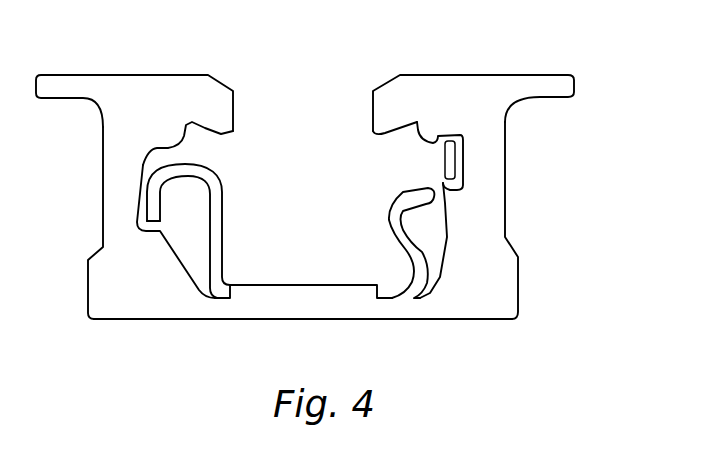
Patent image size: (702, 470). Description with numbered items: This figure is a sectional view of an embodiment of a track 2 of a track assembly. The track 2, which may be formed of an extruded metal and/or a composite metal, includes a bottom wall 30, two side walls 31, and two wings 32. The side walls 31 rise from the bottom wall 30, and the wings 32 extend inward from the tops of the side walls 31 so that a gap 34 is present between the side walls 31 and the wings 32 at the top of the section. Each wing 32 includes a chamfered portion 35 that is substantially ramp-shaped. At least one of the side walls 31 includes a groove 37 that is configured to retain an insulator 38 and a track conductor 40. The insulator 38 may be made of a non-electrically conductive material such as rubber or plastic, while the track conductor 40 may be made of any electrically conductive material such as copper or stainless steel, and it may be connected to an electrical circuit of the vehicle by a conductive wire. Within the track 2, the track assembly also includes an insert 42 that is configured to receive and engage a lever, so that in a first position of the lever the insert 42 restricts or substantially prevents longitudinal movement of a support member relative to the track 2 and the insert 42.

The track 2 is at (556, 218).
The bottom wall 30 is at (400, 307).
The side wall 31 is at (120, 223).
The wing 32 is at (130, 83).
The gap 34 is at (315, 108).
The chamfered portion 35 is at (213, 95).
The groove 37 is at (465, 170).
The insulator 38 is at (462, 143).
The track conductor 40 is at (436, 161).
The insert 42 is at (215, 243).